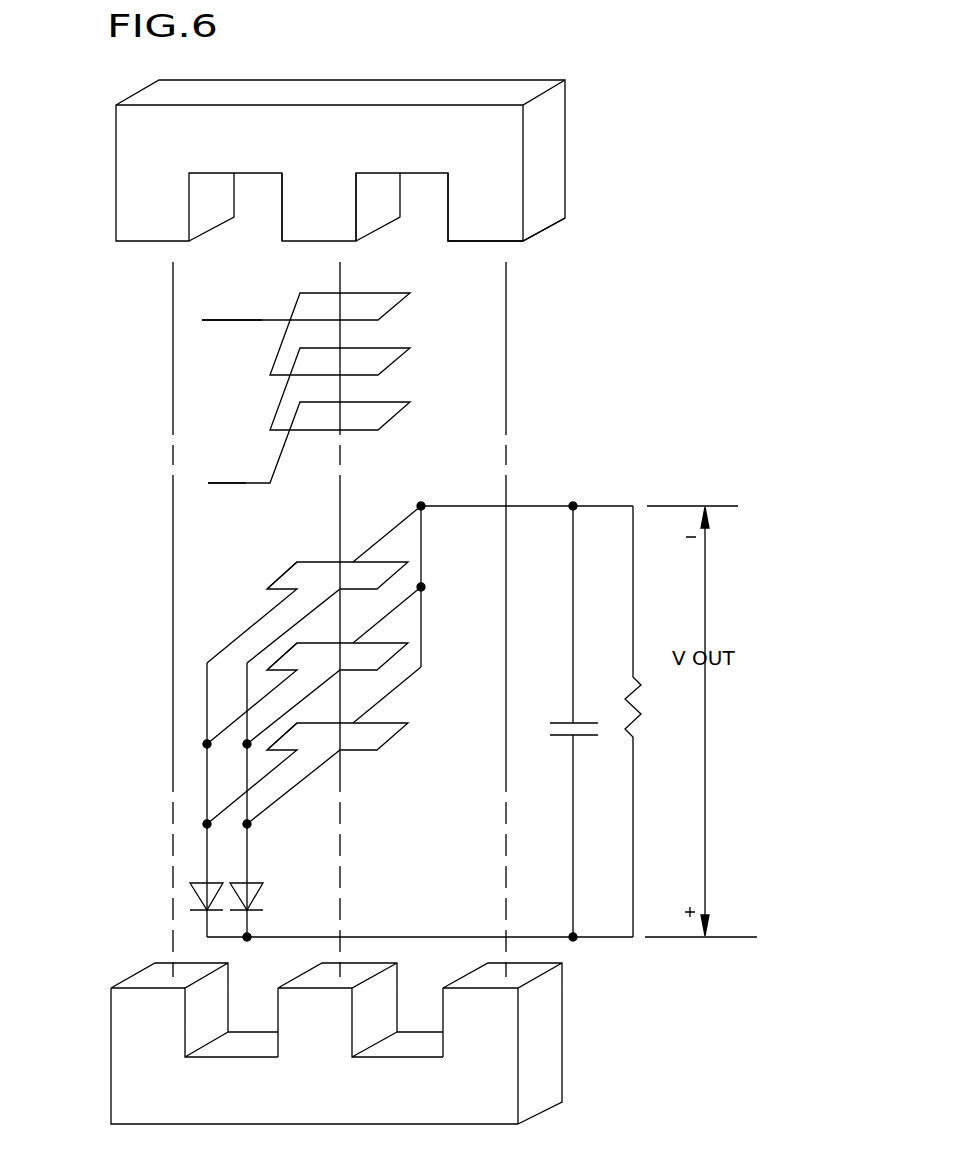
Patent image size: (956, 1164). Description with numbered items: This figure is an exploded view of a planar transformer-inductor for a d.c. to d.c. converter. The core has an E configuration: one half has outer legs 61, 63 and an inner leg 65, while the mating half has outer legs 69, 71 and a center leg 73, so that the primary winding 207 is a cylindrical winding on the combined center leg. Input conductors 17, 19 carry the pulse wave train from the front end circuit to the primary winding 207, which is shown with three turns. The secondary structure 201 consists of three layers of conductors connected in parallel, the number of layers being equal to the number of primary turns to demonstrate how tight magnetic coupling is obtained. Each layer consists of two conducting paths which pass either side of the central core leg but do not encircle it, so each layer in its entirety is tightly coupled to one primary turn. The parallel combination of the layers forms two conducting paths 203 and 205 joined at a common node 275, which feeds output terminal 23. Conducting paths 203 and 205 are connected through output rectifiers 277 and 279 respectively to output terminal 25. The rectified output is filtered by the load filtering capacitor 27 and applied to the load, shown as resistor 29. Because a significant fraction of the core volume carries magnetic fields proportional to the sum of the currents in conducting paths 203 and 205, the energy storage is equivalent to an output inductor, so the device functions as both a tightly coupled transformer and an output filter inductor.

The output conductor 17 is at (262, 320).
The output conductor 19 is at (246, 483).
The output terminal 23 is at (523, 507).
The output terminal 25 is at (602, 937).
The load filtering capacitor 27 is at (580, 721).
The load resistor 29 is at (647, 721).
The outer leg 61 is at (162, 208).
The outer leg 63 is at (491, 208).
The inner leg 65 is at (337, 208).
The outer leg 69 is at (159, 1038).
The outer leg 71 is at (486, 1038).
The center leg 73 is at (332, 1038).
The secondary structure 201 is at (400, 756).
The conducting path 203 is at (278, 573).
The conducting path 205 is at (398, 577).
The primary winding 207 is at (445, 348).
The common node 275 is at (312, 562).
The output rectifier 277 is at (200, 890).
The output rectifier 279 is at (255, 898).